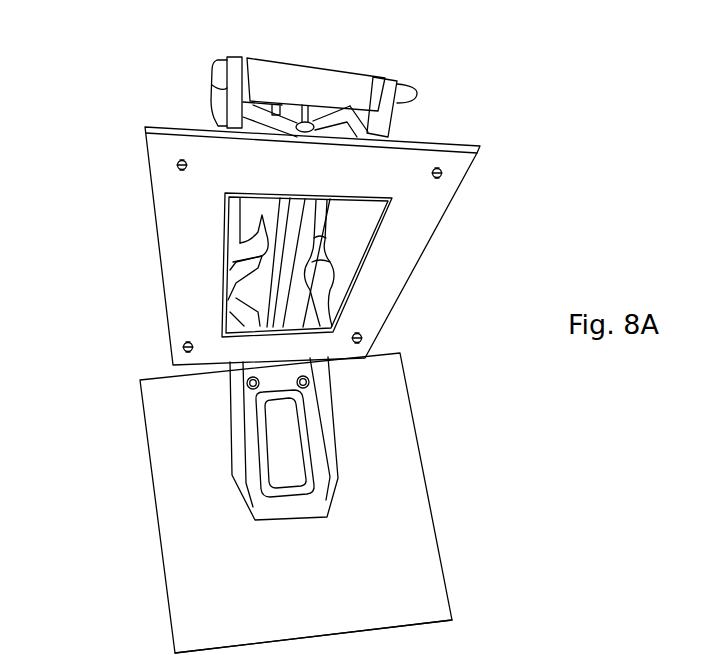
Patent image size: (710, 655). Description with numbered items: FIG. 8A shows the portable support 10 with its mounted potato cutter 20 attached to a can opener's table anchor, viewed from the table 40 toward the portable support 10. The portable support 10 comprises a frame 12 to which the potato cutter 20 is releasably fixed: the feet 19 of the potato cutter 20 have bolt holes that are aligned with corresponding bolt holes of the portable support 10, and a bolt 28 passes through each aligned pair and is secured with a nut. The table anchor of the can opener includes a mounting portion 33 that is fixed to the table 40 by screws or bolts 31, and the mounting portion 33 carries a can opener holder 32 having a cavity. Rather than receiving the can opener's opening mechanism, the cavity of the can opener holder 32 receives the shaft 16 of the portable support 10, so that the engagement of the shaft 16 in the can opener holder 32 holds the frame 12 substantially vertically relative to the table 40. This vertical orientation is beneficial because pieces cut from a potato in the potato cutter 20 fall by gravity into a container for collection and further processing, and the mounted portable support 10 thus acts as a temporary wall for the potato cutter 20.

The portable support 10 is at (152, 248).
The frame 12 is at (420, 233).
The shaft 16 is at (295, 273).
The feet 19 is at (407, 637).
The potato cutter 20 is at (201, 58).
The bolt 28 is at (176, 165).
The screws or bolts 31 is at (248, 385).
The can opener holder 32 is at (230, 368).
The mounting portion 33 is at (322, 397).
The table 40 is at (408, 503).